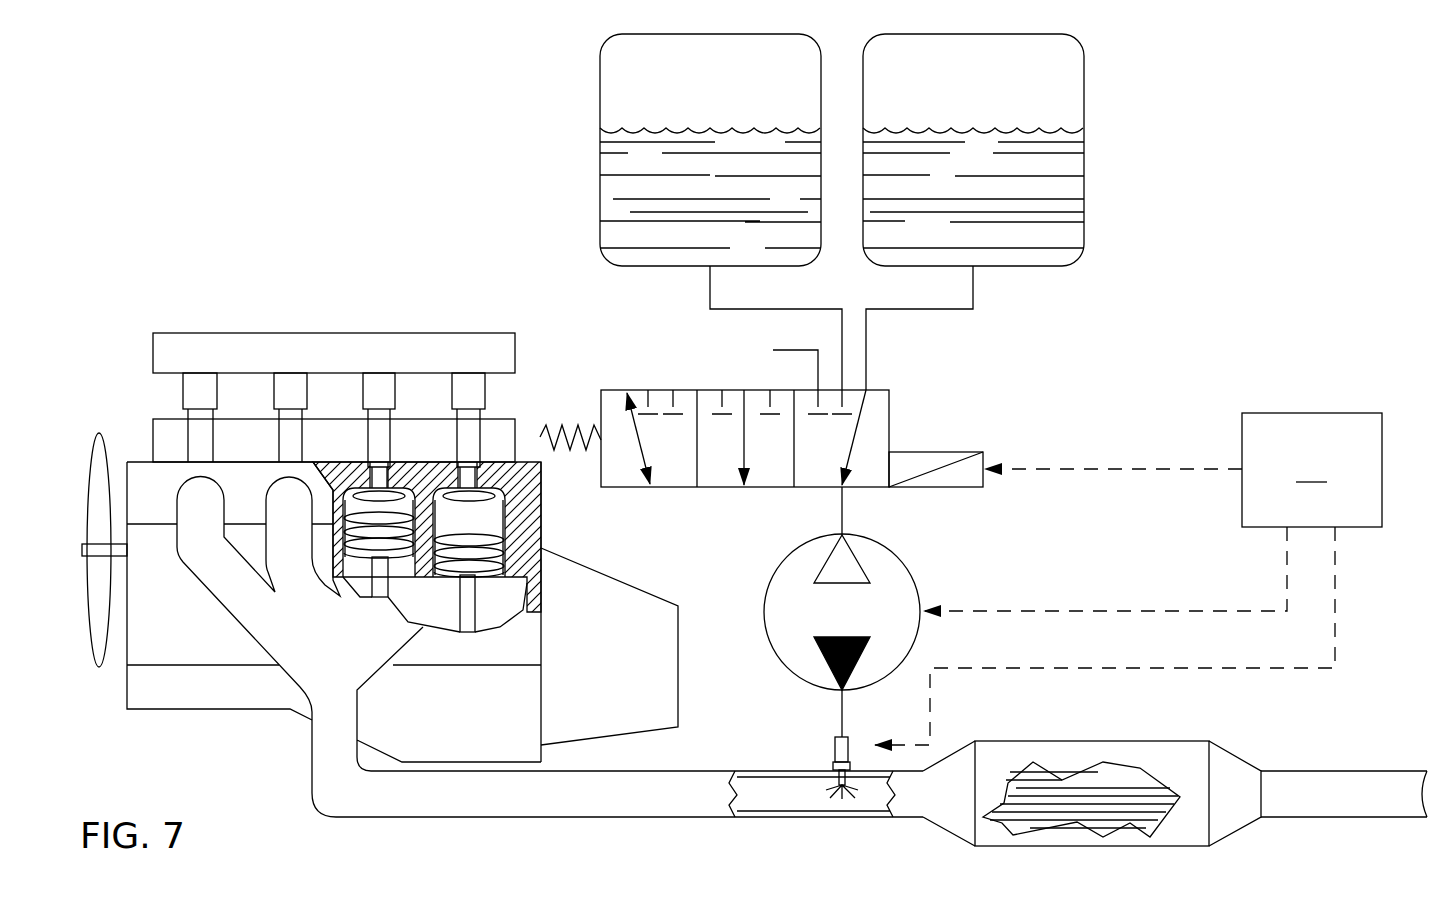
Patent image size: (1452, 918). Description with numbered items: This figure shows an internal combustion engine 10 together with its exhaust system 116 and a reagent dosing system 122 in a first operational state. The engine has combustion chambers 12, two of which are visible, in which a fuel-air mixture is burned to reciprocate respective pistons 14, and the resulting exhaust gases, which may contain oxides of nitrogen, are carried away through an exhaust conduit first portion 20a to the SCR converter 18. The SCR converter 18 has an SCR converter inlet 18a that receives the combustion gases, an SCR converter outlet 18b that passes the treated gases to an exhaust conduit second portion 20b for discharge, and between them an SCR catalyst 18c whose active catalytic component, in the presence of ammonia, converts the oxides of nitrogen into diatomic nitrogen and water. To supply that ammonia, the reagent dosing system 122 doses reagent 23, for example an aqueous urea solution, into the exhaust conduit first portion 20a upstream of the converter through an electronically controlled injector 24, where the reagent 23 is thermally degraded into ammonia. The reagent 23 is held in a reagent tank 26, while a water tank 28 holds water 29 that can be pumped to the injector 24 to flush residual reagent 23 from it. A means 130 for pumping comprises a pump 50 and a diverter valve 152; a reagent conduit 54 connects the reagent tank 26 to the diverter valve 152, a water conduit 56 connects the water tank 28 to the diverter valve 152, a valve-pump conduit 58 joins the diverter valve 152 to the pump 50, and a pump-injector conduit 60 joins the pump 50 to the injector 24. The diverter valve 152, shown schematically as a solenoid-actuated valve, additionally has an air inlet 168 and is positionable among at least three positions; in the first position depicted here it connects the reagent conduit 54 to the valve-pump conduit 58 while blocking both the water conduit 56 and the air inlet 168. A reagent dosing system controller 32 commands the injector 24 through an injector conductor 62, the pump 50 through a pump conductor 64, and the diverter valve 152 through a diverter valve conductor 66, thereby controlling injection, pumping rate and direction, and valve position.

The internal combustion engine 10 is at (207, 710).
The combustion chamber 12 is at (400, 520).
The piston 14 is at (400, 536).
The SCR converter 18 is at (1095, 741).
The SCR converter inlet 18a is at (920, 790).
The SCR converter outlet 18b is at (1262, 795).
The SCR catalyst 18c is at (1042, 800).
The exhaust conduit first portion 20a is at (712, 807).
The exhaust conduit second portion 20b is at (1365, 807).
The reagent 23 is at (1050, 185).
The injector 24 is at (833, 748).
The reagent tank 26 is at (1085, 82).
The water tank 28 is at (600, 91).
The water 29 is at (612, 199).
The reagent dosing system controller 32 is at (1312, 470).
The pump 50 is at (857, 626).
The reagent conduit 54 is at (945, 310).
The water conduit 56 is at (713, 318).
The valve-pump conduit 58 is at (842, 500).
The pump-injector conduit 60 is at (842, 722).
The injector conductor 62 is at (1335, 618).
The pump conductor 64 is at (1285, 570).
The diverter valve conductor 66 is at (1160, 468).
The exhaust system 116 is at (660, 830).
The reagent dosing system 122 is at (770, 718).
The means for pumping 130 is at (933, 425).
The diverter valve 152 is at (697, 390).
The air inlet 168 is at (773, 350).